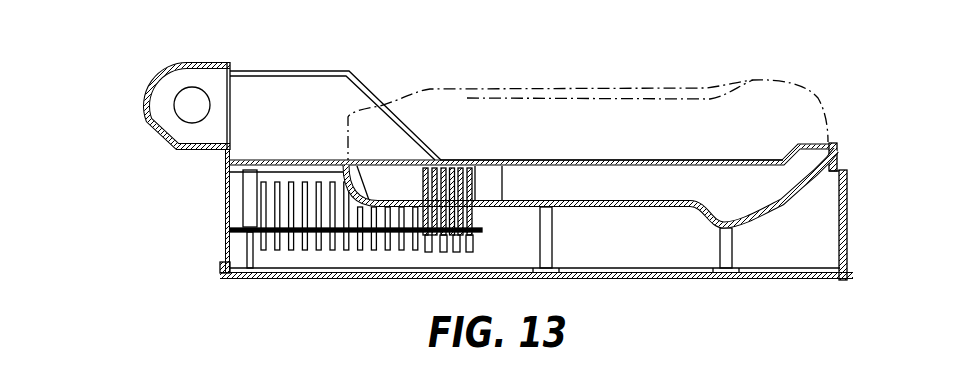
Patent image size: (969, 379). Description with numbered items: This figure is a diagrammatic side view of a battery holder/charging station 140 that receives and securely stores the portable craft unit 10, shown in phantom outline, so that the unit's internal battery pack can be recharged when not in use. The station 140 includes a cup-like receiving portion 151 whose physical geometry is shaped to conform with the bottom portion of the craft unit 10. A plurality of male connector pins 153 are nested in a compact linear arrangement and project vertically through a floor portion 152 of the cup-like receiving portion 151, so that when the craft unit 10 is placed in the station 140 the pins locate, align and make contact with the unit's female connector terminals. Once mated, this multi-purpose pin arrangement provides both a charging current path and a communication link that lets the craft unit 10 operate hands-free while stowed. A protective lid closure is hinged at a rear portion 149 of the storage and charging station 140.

The craft unit 10 is at (792, 76).
The battery holder/charging station 140 is at (226, 245).
The rear portion 149 is at (222, 156).
The cup-like receiving portion 151 is at (647, 180).
The floor portion 152 is at (520, 200).
The male connector pins 153 is at (455, 164).